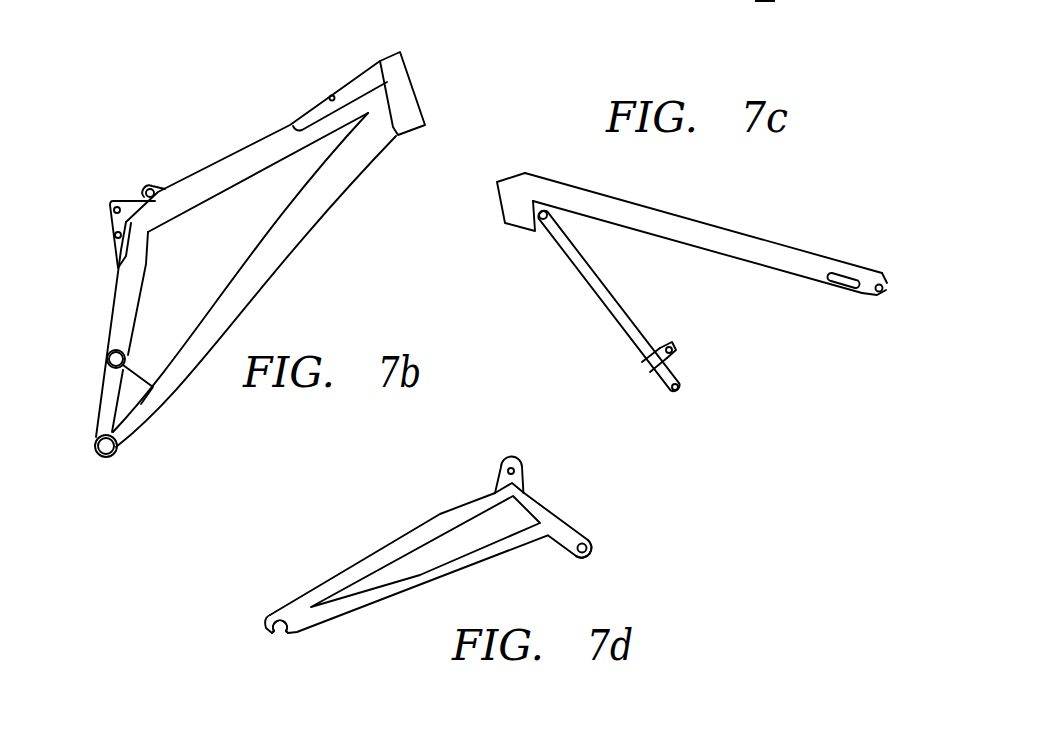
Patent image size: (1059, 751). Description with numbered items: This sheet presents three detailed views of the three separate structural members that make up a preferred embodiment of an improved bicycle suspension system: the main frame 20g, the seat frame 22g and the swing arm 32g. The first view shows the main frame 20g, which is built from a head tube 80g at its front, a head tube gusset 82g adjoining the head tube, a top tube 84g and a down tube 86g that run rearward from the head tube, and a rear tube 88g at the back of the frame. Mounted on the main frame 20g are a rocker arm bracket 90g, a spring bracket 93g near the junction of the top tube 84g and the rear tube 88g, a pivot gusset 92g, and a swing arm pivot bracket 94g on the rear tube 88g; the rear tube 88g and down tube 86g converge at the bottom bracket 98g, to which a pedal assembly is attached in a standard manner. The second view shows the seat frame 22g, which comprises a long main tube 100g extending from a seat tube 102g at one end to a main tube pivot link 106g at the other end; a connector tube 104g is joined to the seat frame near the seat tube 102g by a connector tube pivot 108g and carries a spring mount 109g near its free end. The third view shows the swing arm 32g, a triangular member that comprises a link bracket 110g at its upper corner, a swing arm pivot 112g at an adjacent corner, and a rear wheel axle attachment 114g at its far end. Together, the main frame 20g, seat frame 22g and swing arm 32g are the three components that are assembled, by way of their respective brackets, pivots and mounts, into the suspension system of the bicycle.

In FIG. 7b, the main frame 20g is at (305, 292).
In FIG. 7b, the head tube 80g is at (412, 85).
In FIG. 7b, the head tube gusset 82g is at (350, 81).
In FIG. 7b, the top tube 84g is at (217, 161).
In FIG. 7b, the down tube 86g is at (318, 222).
In FIG. 7b, the rear tube 88g is at (115, 300).
In FIG. 7b, the rocker arm bracket 90g is at (110, 212).
In FIG. 7b, the pivot gusset 92g is at (128, 406).
In FIG. 7b, the spring bracket 93g is at (153, 189).
In FIG. 7b, the swing arm pivot bracket 94g is at (106, 364).
In FIG. 7b, the bottom bracket 98g is at (113, 458).
In FIG. 7c, the seat frame 22g is at (755, 212).
In FIG. 7c, the main tube 100g is at (689, 219).
In FIG. 7c, the seat tube 102g is at (497, 192).
In FIG. 7c, the connector tube 104g is at (607, 310).
In FIG. 7c, the main tube pivot link 106g is at (886, 283).
In FIG. 7c, the connector tube pivot 108g is at (562, 215).
In FIG. 7c, the spring mount 109g is at (680, 342).
In FIG. 7d, the swing arm 32g is at (353, 532).
In FIG. 7d, the link bracket 110g is at (500, 461).
In FIG. 7d, the swing arm pivot 112g is at (592, 545).
In FIG. 7d, the rear wheel axle attachment 114g is at (266, 631).